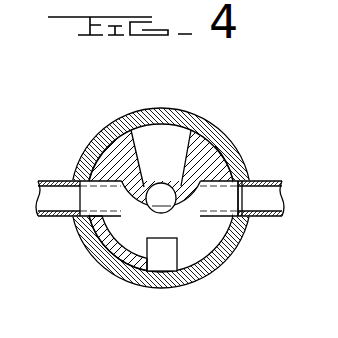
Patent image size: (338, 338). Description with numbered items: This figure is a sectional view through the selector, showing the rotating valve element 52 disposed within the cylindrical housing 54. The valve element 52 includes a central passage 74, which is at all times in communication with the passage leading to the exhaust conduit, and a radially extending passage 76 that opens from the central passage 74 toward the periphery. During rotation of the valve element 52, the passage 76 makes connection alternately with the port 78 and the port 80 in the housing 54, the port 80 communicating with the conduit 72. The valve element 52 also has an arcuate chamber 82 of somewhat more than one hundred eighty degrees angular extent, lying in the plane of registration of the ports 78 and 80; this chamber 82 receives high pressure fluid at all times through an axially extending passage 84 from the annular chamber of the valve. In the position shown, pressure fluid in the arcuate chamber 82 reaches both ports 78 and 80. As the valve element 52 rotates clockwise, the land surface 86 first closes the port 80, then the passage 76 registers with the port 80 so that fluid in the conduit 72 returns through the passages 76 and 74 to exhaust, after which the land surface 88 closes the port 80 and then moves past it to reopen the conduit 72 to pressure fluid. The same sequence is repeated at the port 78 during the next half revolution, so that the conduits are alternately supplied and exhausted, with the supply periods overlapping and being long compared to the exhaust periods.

The rotating valve element 52 is at (112, 163).
The cylindrical housing 54 is at (222, 134).
The conduit 72 is at (267, 217).
The central passage 74 is at (161, 198).
The radially extending passage 76 is at (138, 167).
The port 78 is at (58, 210).
The port 80 is at (230, 197).
The arcuate chamber 82 is at (202, 245).
The axially extending passage 84 is at (151, 263).
The land surface 86 is at (229, 185).
The land surface 88 is at (104, 133).